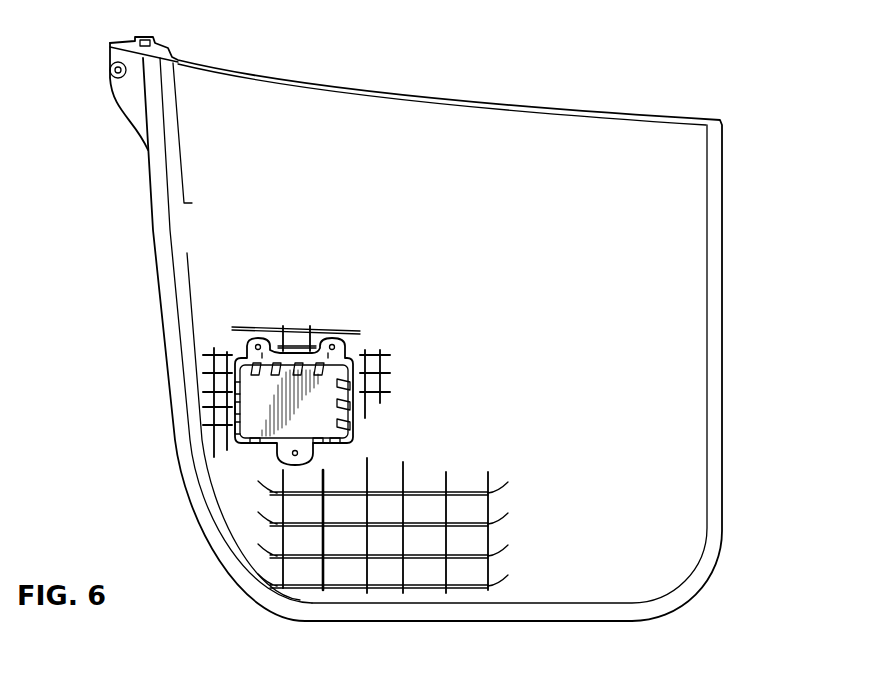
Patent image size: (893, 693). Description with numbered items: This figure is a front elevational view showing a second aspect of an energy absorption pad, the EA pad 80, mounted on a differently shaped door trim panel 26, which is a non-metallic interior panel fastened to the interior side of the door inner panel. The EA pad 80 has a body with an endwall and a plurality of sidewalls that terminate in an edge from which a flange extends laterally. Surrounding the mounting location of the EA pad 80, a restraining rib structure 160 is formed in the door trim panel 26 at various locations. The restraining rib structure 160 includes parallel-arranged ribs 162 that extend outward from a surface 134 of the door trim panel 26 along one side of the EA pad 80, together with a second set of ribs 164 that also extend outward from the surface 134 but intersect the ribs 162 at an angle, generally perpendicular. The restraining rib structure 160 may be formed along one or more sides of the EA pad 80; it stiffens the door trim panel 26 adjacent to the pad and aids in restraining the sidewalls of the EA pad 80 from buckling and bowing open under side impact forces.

The door trim panel 26 is at (782, 227).
The EA pad 80 is at (258, 408).
The surface 134 is at (543, 408).
The restraining rib structure 160 is at (188, 384).
The ribs 162 is at (300, 330).
The wire 164 is at (290, 346).